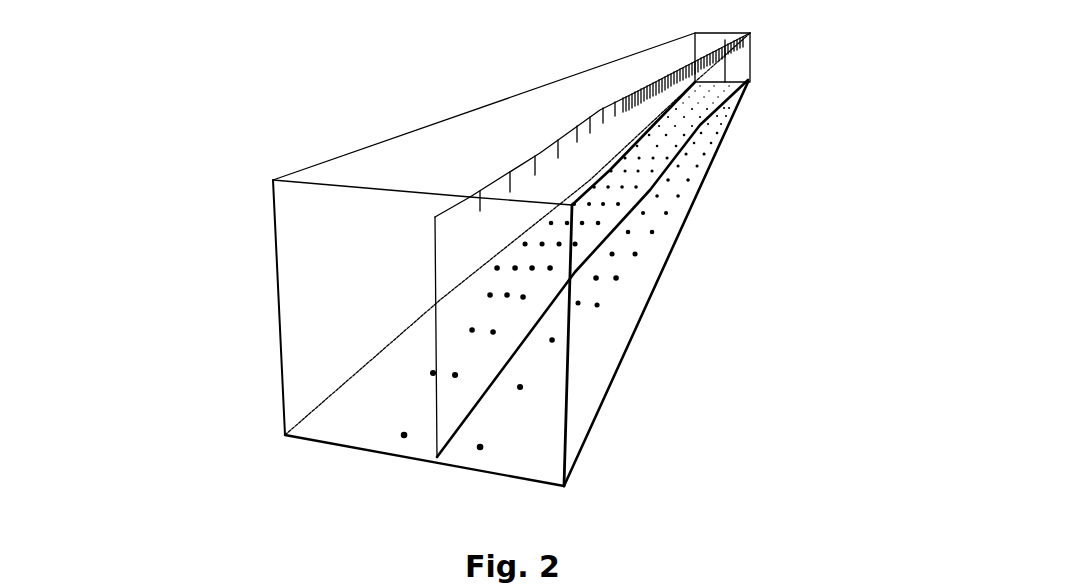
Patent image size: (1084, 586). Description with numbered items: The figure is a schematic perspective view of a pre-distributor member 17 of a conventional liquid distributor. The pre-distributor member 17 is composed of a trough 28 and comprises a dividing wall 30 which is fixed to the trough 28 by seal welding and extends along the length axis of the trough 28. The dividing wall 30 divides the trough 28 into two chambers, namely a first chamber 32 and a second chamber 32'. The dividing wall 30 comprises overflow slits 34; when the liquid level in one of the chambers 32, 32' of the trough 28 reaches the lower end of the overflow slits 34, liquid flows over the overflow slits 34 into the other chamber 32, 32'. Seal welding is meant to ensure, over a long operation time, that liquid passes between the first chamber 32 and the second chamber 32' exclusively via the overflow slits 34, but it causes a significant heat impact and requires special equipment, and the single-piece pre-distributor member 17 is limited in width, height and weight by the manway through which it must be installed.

The pre-distributor member 17 is at (194, 433).
The trough 28 is at (274, 237).
The dividing wall 30 is at (448, 247).
The first chamber 32 is at (493, 299).
The second chamber 32' is at (579, 310).
The overflow slits 34 is at (512, 182).